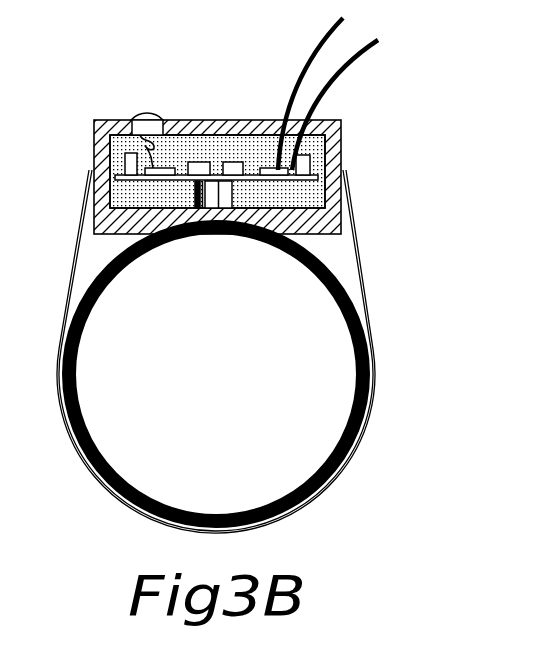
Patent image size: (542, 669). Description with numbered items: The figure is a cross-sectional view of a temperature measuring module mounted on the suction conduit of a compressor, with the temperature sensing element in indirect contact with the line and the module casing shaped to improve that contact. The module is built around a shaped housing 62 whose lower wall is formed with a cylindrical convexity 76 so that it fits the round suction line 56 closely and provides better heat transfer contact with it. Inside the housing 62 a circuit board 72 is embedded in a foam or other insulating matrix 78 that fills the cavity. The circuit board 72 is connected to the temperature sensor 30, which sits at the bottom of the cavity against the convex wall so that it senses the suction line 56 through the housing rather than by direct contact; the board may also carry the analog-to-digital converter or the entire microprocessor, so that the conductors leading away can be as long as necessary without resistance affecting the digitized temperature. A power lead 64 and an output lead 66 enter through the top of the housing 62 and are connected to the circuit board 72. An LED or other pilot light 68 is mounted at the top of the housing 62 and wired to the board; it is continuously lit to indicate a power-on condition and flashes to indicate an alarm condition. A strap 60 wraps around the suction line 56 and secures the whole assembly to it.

The temperature sensor 30 is at (217, 200).
The suction line 56 is at (338, 307).
The strap 60 is at (353, 270).
The housing 62 is at (230, 106).
The power lead 64 is at (358, 58).
The output lead 66 is at (310, 64).
The pilot light 68 is at (140, 117).
The circuit board 72 is at (157, 182).
The cylindrical convexity 76 is at (187, 237).
The insulating matrix 78 is at (303, 195).